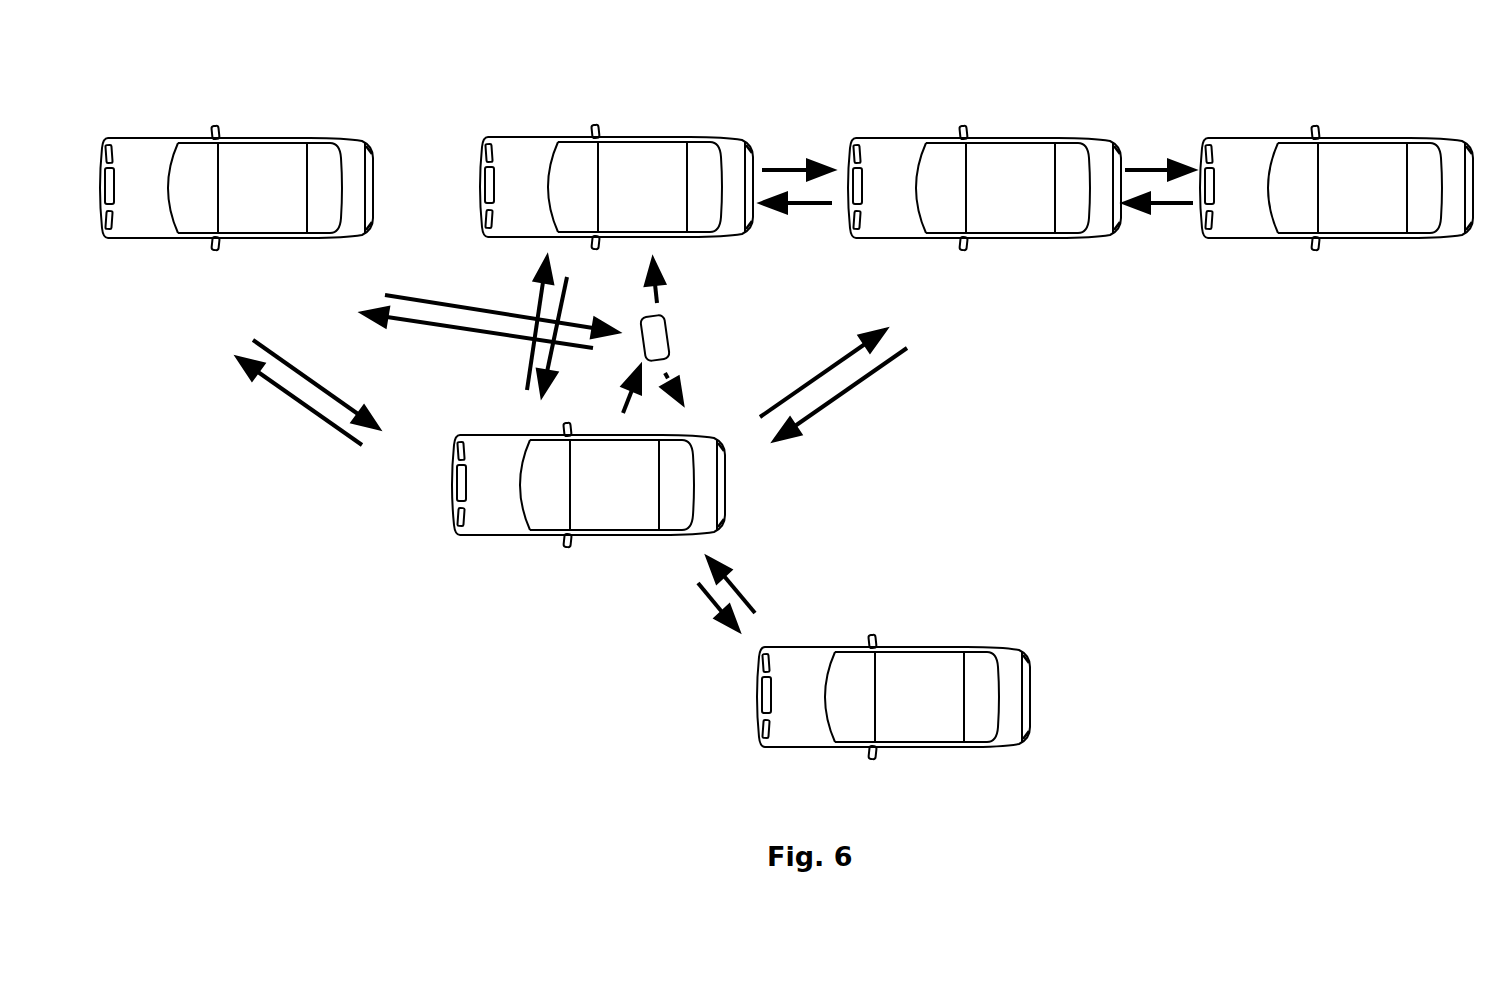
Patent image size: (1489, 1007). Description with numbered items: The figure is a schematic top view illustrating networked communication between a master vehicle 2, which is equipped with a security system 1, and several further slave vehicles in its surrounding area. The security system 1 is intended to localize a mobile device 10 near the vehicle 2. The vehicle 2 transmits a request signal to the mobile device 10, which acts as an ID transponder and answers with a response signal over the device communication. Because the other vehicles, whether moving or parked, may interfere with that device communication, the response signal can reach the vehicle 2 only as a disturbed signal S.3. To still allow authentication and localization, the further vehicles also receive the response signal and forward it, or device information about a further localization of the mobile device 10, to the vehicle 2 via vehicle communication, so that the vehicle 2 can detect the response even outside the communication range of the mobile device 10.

The security system 1 is at (218, 85).
The vehicle 2 is at (588, 470).
The mobile device 10 is at (667, 328).
The disturbed signal S.3 is at (696, 386).